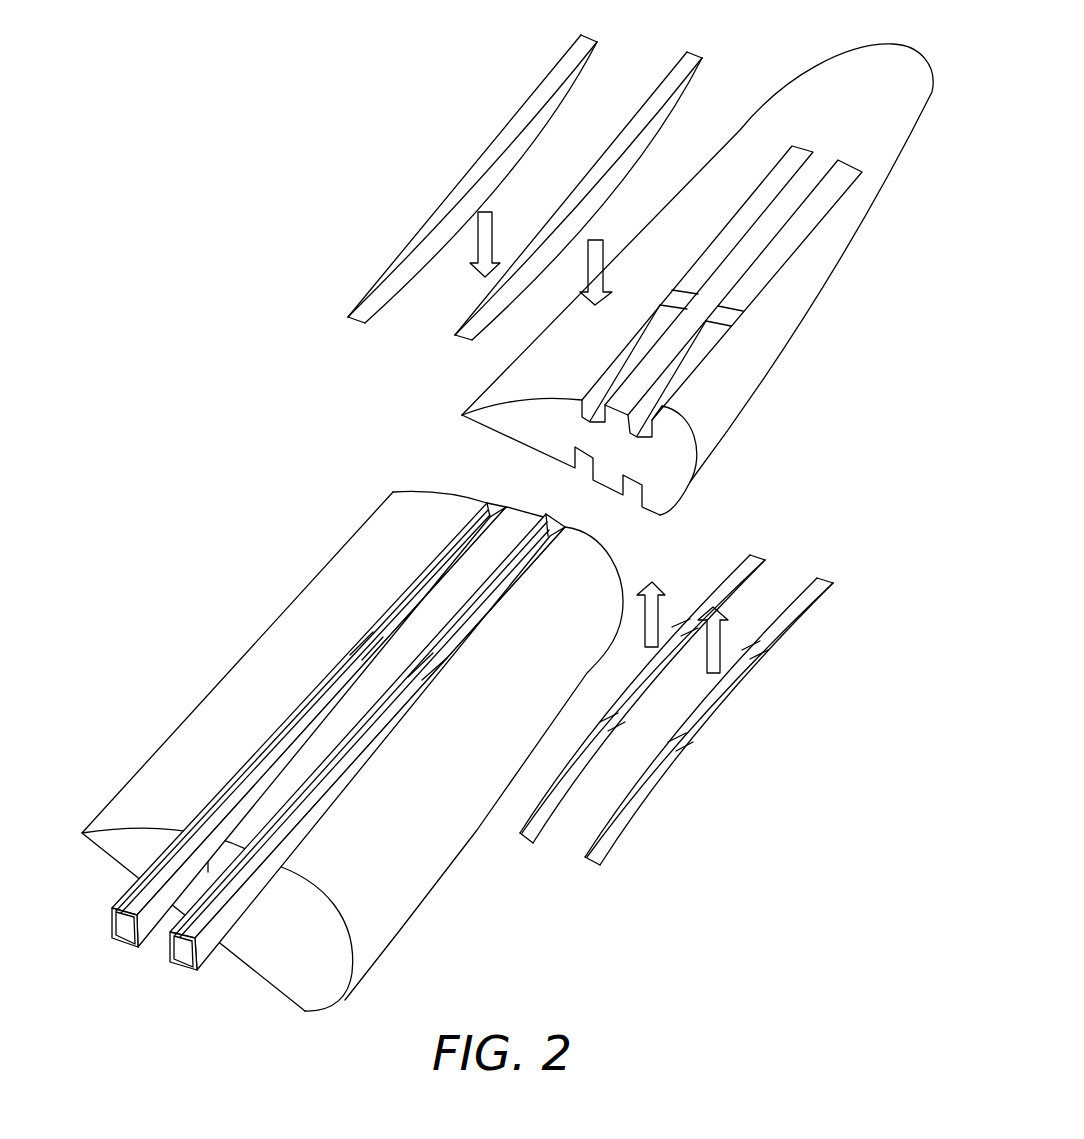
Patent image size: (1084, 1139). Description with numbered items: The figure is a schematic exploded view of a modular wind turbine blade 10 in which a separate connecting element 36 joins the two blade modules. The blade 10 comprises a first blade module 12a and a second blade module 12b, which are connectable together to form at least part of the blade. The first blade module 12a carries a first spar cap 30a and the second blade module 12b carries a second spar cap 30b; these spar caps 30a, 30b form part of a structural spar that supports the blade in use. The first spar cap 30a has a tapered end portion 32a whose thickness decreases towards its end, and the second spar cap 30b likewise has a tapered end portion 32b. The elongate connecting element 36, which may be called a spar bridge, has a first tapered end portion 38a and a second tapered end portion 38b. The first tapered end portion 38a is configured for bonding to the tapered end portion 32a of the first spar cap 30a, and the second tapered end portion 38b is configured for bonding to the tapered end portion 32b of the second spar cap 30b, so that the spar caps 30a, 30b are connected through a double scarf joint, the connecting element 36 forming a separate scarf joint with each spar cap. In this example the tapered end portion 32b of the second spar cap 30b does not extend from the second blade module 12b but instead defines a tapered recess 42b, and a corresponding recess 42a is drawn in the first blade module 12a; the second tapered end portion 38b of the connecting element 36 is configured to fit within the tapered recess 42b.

The modular wind turbine blade 10 is at (208, 357).
The first blade module 12a is at (205, 682).
The second blade module 12b is at (888, 224).
The first spar cap 30a is at (188, 922).
The second spar cap 30b is at (848, 170).
The tapered end portion 32a is at (413, 598).
The tapered end portion 32b is at (660, 307).
The connecting element 36 is at (432, 167).
The first tapered end portion 38a is at (390, 317).
The second tapered end portion 38b is at (592, 63).
The groove of rail 42a is at (468, 538).
The tapered recess 42b is at (613, 385).